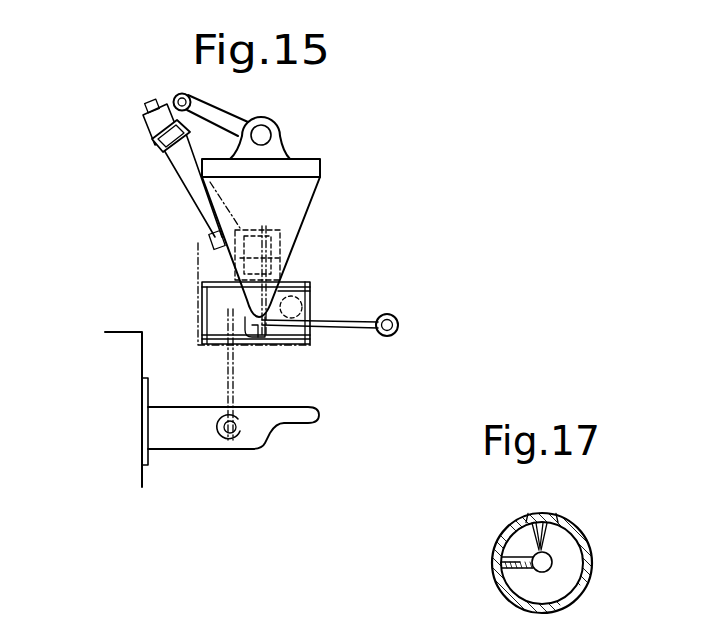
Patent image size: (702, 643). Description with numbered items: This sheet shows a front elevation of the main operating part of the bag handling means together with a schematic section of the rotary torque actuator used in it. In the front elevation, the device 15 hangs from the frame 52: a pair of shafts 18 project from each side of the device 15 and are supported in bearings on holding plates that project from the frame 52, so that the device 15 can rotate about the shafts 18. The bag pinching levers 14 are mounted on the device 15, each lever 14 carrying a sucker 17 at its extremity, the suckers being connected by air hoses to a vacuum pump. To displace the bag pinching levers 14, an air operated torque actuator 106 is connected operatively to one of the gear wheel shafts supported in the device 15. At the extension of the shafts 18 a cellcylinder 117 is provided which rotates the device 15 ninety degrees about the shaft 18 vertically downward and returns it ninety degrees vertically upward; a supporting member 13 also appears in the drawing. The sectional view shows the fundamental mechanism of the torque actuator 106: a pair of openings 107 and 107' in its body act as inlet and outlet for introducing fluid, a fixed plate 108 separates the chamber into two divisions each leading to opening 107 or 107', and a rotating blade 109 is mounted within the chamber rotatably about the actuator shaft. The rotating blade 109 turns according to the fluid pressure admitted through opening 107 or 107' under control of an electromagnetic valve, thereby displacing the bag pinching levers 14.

In FIG. 15, the cellcylinder 117 is at (192, 187).
In FIG. 15, the frame 52 is at (318, 190).
In FIG. 15, the torque actuator 106 is at (197, 240).
In FIG. 17, the torque actuator 106 is at (588, 569).
In FIG. 15, the device 15 is at (308, 282).
In FIG. 15, the shaft 18 is at (302, 312).
In FIG. 15, the bag pinching lever 14 is at (337, 330).
In FIG. 15, the sucker 17 is at (398, 331).
In FIG. 15, the support arm 13 is at (271, 408).
In FIG. 17, the opening 107 is at (510, 522).
In FIG. 17, the opening 107' is at (585, 504).
In FIG. 17, the fixed plate 108 is at (579, 550).
In FIG. 17, the rotating blade 109 is at (517, 570).